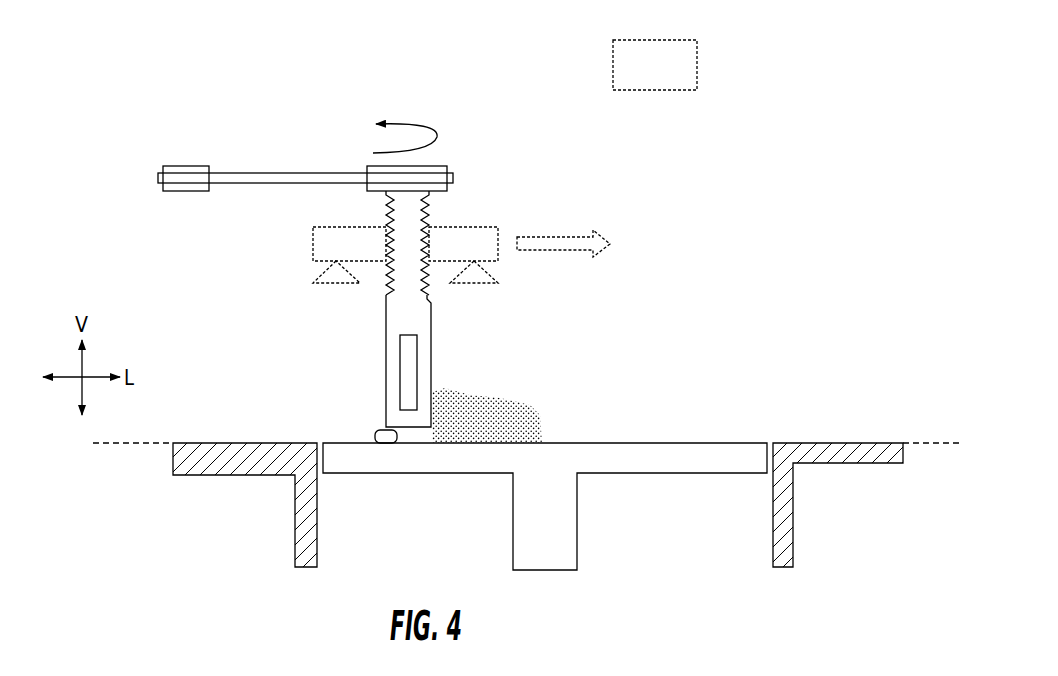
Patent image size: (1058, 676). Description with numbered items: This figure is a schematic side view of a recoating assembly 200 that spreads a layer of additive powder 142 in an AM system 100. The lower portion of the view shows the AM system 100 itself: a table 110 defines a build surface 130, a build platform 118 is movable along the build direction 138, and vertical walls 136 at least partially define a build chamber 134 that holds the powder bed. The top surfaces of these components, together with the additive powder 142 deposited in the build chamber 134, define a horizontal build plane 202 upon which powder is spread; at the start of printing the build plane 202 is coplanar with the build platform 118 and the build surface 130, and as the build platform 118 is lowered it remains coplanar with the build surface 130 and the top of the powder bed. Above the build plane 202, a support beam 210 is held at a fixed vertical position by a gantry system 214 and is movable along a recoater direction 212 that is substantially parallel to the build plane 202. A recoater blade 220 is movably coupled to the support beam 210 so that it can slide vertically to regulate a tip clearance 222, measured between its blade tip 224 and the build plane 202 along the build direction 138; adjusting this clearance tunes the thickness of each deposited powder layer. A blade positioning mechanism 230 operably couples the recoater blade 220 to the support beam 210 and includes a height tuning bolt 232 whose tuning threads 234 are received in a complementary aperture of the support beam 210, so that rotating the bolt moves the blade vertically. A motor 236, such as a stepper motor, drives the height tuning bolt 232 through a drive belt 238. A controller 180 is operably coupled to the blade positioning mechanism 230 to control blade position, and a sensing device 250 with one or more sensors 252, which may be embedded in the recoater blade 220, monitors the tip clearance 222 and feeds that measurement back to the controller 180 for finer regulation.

The AM system 100 is at (756, 87).
The table 110 is at (858, 455).
The build platform 118 is at (665, 468).
The build surface 130 is at (829, 469).
The build chamber 134 is at (545, 506).
The vertical walls 136 is at (305, 520).
The build direction 138 is at (544, 540).
The additive powder 142 is at (525, 415).
The controller 180 is at (408, 335).
The recoating assembly 200 is at (210, 72).
The build plane 202 is at (118, 445).
The support beam 210 is at (483, 237).
The recoater direction 212 is at (607, 243).
The gantry system 214 is at (330, 283).
The recoater blade 220 is at (431, 345).
The tip clearance 222 is at (372, 436).
The blade tip 224 is at (408, 431).
The blade positioning mechanism 230 is at (337, 169).
The height tuning bolt 232 is at (425, 168).
The tuning threads 234 is at (429, 250).
The motor 236 is at (186, 167).
The drive belt 238 is at (276, 183).
The sensing device 250 is at (419, 375).
The sensors 252 is at (408, 377).